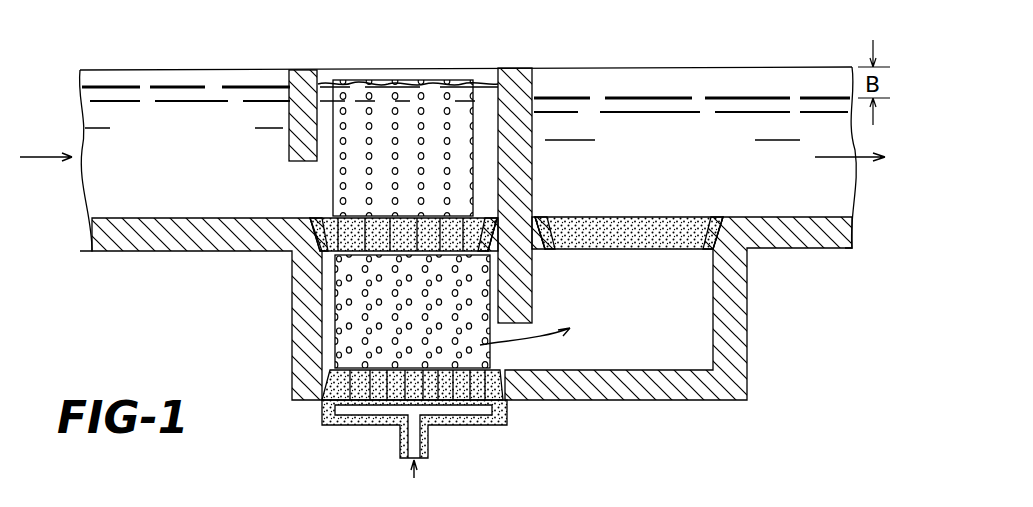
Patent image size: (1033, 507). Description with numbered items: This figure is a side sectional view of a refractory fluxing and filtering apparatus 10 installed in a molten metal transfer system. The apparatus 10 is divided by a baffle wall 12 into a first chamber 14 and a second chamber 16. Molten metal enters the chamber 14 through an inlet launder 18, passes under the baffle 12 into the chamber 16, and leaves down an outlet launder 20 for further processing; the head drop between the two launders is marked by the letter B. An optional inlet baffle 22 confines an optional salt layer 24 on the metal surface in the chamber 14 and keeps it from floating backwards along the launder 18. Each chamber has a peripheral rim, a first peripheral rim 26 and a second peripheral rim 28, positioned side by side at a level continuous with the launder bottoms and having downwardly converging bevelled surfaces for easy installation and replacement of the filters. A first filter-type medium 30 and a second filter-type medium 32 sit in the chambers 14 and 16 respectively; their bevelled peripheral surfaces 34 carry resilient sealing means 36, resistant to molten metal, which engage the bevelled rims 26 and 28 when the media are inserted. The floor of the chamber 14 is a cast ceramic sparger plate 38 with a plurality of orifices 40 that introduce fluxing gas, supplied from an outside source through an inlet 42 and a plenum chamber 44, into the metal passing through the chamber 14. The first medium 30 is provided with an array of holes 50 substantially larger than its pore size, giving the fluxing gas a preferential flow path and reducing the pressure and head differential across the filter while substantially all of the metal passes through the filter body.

The refractory fluxing and filtering apparatus 10 is at (747, 356).
The baffle wall 12 is at (520, 72).
The chamber 14 is at (388, 328).
The chamber 16 is at (644, 311).
The inlet launder 18 is at (152, 159).
The outlet launder 20 is at (712, 152).
The inlet baffle 22 is at (302, 72).
The salt layer 24 is at (438, 82).
The first peripheral rim 26 is at (292, 258).
The second peripheral rim 28 is at (758, 250).
The first filter-type medium 30 is at (407, 215).
The second filter-type medium 32 is at (655, 216).
The bevelled peripheral surfaces 34 is at (525, 250).
The resilient sealing means 36 is at (538, 215).
The cast ceramic sparger plate 38 is at (502, 388).
The orifices 40 is at (382, 403).
The inlet 42 is at (414, 480).
The plenum chamber 44 is at (450, 410).
The array of holes 50 is at (395, 214).